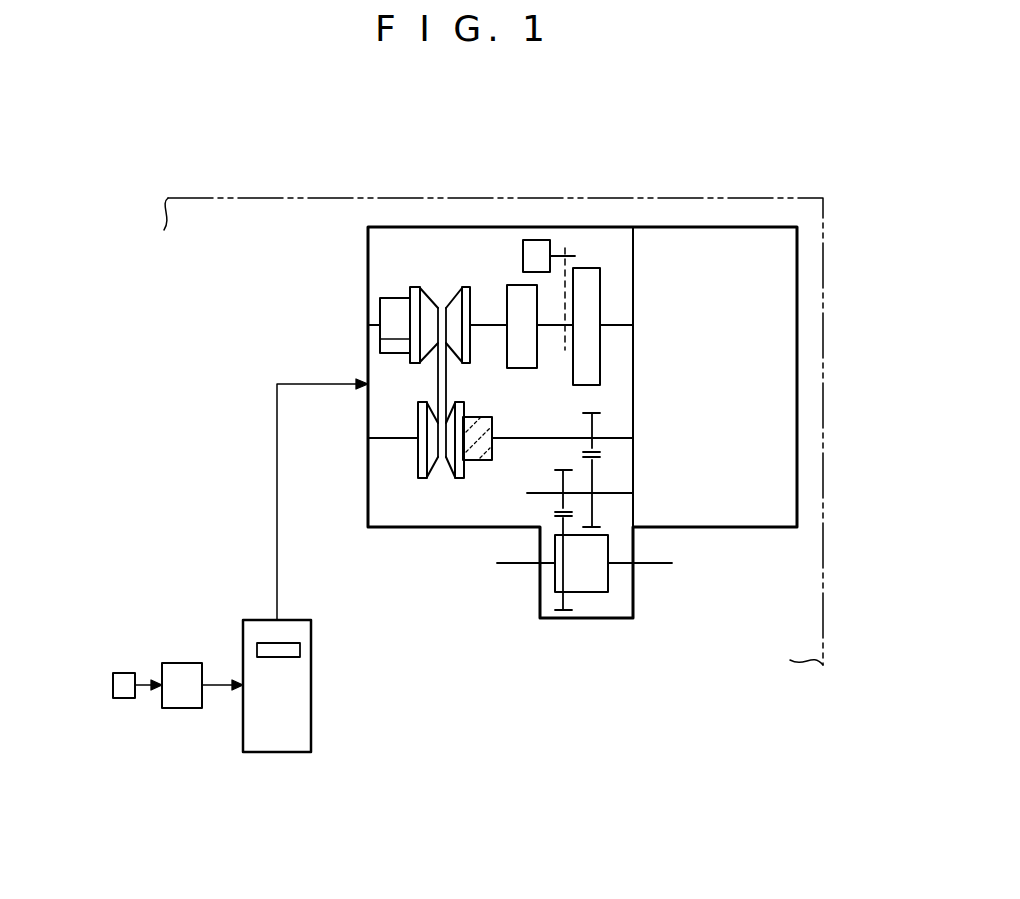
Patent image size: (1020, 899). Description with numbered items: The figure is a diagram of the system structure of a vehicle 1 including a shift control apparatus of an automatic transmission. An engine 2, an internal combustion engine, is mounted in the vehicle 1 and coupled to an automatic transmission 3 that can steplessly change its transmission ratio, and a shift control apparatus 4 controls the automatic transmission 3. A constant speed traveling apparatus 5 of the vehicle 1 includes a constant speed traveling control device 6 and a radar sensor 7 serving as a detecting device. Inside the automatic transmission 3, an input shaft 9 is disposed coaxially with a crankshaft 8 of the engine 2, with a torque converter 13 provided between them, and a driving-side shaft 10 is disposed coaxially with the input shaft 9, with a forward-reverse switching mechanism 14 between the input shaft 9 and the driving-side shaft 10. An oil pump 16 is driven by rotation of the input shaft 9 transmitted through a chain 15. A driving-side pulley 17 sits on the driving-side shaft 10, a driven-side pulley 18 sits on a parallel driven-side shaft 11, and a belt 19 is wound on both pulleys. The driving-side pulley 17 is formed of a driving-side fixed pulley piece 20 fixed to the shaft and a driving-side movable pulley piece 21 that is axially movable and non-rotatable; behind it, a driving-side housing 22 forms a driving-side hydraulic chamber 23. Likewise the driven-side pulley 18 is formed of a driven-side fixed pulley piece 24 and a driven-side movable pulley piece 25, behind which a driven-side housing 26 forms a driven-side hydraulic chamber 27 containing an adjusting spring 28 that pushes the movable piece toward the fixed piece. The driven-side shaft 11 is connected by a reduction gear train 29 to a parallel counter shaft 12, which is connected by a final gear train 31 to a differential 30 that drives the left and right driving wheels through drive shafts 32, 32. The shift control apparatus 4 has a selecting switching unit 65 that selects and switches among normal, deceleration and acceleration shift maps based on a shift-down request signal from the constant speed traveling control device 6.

The vehicle 1 is at (202, 197).
The engine 2 is at (782, 527).
The automatic transmission 3 is at (449, 206).
The shift control apparatus 4 is at (305, 565).
The constant speed traveling apparatus 5 is at (182, 636).
The constant speed traveling control device 6 is at (183, 708).
The radar sensor 7 is at (125, 673).
The crankshaft 8 is at (622, 323).
The input shaft 9 is at (552, 328).
The driving-side shaft 10 is at (488, 321).
The driven-side shaft 11 is at (400, 440).
The counter shaft 12 is at (555, 493).
The torque converter 13 is at (595, 277).
The forward-reverse switching mechanism 14 is at (520, 297).
The chain 15 is at (581, 272).
The oil pump 16 is at (540, 250).
The driving-side pulley 17 is at (356, 292).
The driven-side pulley 18 is at (403, 499).
The belt 19 is at (437, 384).
The driving-side fixed pulley piece 20 is at (462, 287).
The driving-side movable pulley piece 21 is at (412, 288).
The driving-side housing 22 is at (390, 310).
The driving-side hydraulic chamber 23 is at (388, 341).
The driven-side fixed pulley piece 24 is at (421, 479).
The driven-side movable pulley piece 25 is at (457, 479).
The driven-side housing 26 is at (479, 417).
The driven-side hydraulic chamber 27 is at (472, 461).
The adjusting spring 28 is at (485, 461).
The reduction gear train 29 is at (608, 455).
The differential 30 is at (590, 586).
The final gear train 31 is at (556, 527).
The drive shaft 32 is at (507, 568).
The selecting switching unit 65 is at (293, 655).